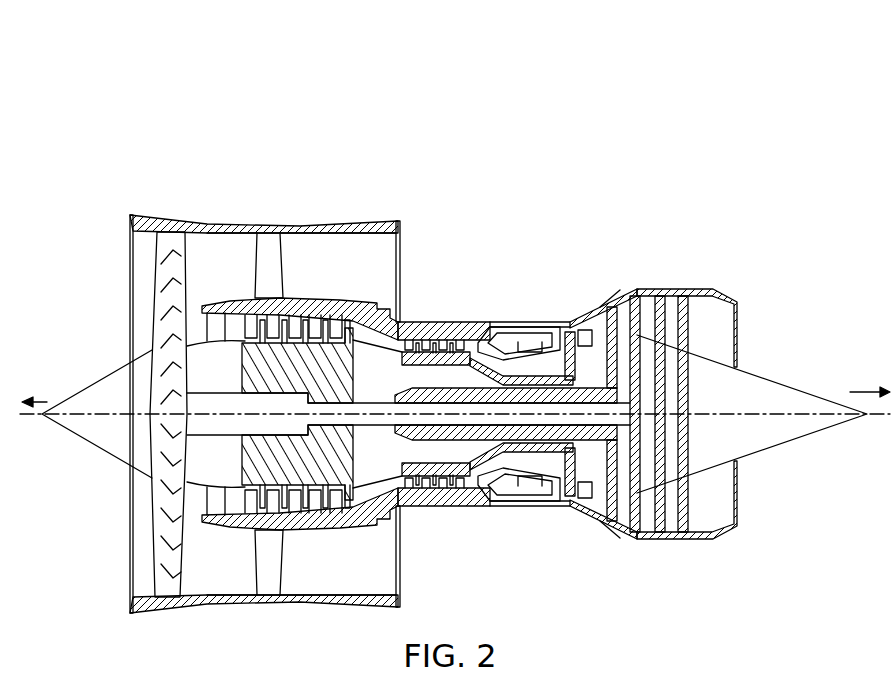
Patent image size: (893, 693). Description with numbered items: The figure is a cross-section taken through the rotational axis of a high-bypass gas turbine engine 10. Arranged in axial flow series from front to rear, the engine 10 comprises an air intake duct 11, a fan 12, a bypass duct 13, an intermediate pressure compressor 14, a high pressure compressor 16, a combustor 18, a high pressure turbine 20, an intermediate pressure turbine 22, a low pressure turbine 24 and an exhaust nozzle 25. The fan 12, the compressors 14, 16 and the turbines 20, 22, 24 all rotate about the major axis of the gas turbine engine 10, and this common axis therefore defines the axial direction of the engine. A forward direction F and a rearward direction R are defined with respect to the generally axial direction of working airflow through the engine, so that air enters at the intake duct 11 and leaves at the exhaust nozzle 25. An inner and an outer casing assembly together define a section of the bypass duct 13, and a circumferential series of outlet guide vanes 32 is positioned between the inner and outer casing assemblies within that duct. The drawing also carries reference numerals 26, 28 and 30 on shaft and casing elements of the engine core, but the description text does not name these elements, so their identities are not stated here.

The bypass gas turbine engine 10 is at (455, 318).
The air intake duct 11 is at (138, 262).
The fan 12 is at (152, 318).
The bypass duct 13 is at (329, 277).
The intermediate pressure compressor 14 is at (243, 313).
The high pressure compressor 16 is at (450, 325).
The combustor 18 is at (530, 342).
The high pressure turbine 20 is at (572, 318).
The intermediate pressure turbine 22 is at (613, 303).
The low pressure turbine 24 is at (693, 289).
The exhaust nozzle 25 is at (700, 338).
The low pressure shaft 26 is at (200, 427).
The high pressure shaft 28 is at (458, 437).
The inner casing 30 is at (527, 447).
The outlet guide vanes 32 is at (268, 256).